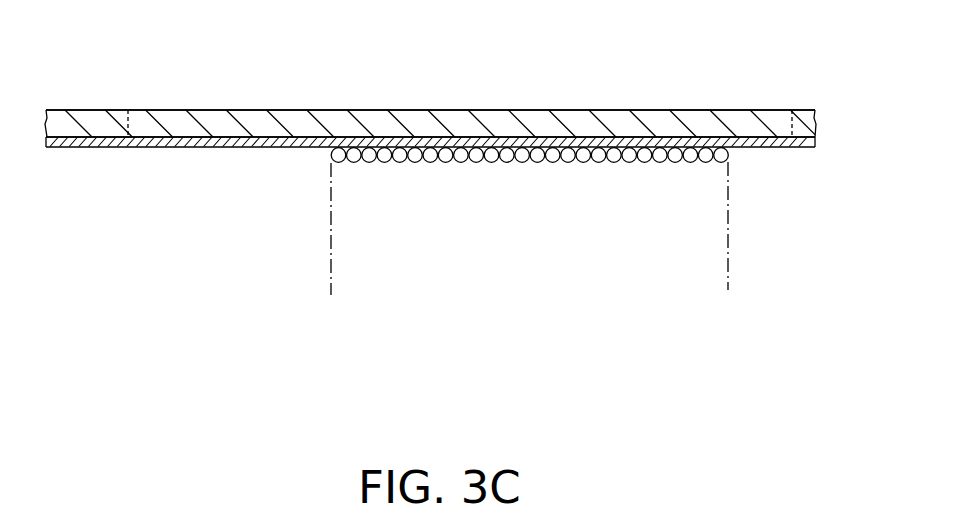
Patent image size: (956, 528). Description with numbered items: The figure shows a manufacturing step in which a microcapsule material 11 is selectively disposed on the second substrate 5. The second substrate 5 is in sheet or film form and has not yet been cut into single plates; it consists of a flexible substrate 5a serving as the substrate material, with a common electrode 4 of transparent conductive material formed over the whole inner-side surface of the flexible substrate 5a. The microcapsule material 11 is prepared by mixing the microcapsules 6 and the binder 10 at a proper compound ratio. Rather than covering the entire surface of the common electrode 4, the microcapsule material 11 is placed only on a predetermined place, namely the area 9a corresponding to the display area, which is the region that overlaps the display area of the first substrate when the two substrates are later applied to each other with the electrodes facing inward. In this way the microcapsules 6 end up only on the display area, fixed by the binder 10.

The common electrode 4 is at (238, 143).
The second substrate 5 is at (412, 109).
The flexible substrate 5a is at (327, 113).
The microcapsules 6 is at (552, 162).
The area corresponding to the display area 9a is at (728, 279).
The binder 10 is at (645, 188).
The microcapsule material 11 is at (529, 206).